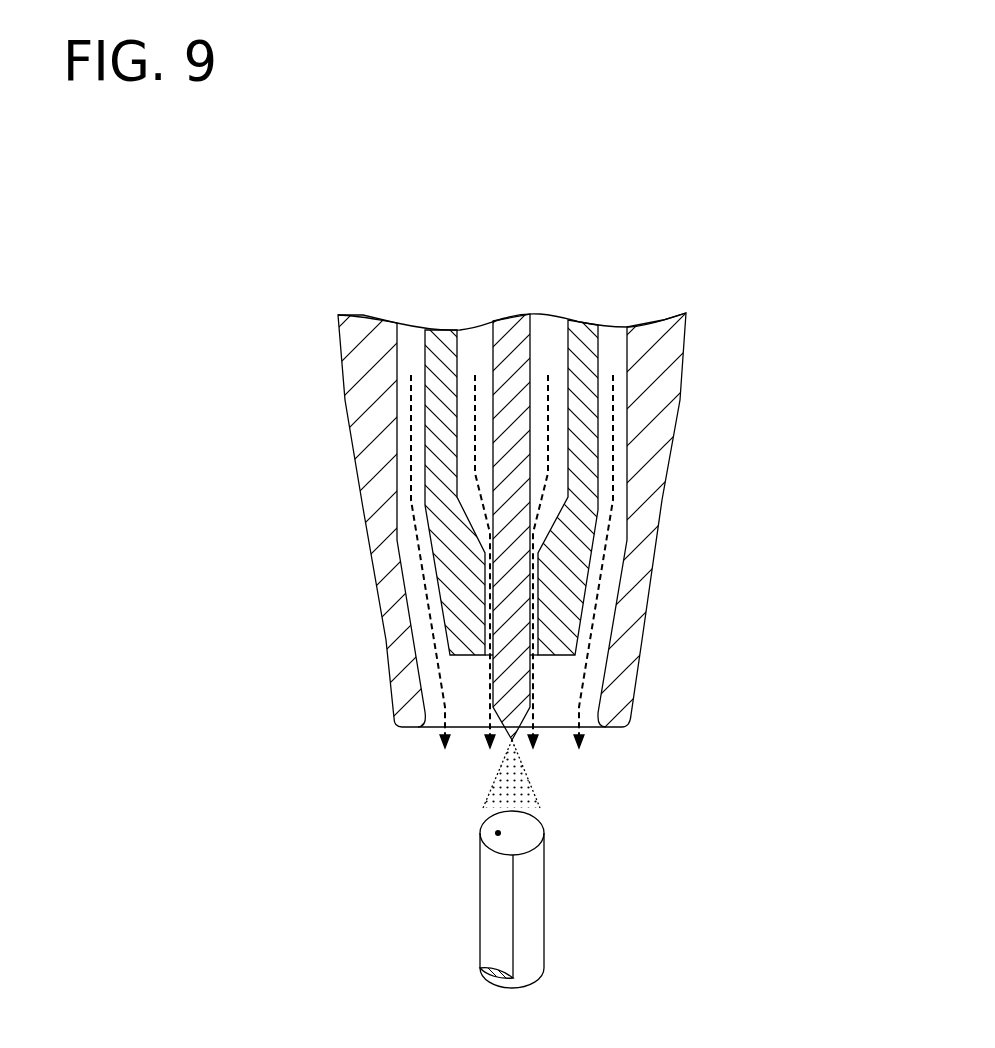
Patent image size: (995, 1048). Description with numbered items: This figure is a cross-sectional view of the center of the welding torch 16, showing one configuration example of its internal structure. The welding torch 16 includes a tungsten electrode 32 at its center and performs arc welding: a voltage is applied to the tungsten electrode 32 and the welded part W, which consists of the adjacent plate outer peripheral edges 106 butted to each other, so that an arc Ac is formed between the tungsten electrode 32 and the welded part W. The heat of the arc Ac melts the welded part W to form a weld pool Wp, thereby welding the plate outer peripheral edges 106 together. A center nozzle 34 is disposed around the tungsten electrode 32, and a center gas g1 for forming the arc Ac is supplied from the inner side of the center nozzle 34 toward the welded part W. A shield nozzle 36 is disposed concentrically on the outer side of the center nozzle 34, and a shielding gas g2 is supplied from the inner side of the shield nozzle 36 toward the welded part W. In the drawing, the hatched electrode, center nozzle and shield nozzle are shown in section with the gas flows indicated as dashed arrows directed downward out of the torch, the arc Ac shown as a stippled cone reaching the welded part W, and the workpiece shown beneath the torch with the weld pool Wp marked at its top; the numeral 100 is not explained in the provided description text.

The welding torch 16 is at (528, 176).
The tungsten electrode 32 is at (512, 330).
The center nozzle 34 is at (440, 348).
The shield nozzle 36 is at (660, 422).
The center gas g1 is at (477, 478).
The shielding gas g2 is at (593, 617).
The arc Ac is at (522, 783).
The welded part W is at (563, 830).
The weld pool Wp is at (498, 833).
The optical fiber 100 is at (495, 955).
The plate outer peripheral edges 106 is at (497, 880).